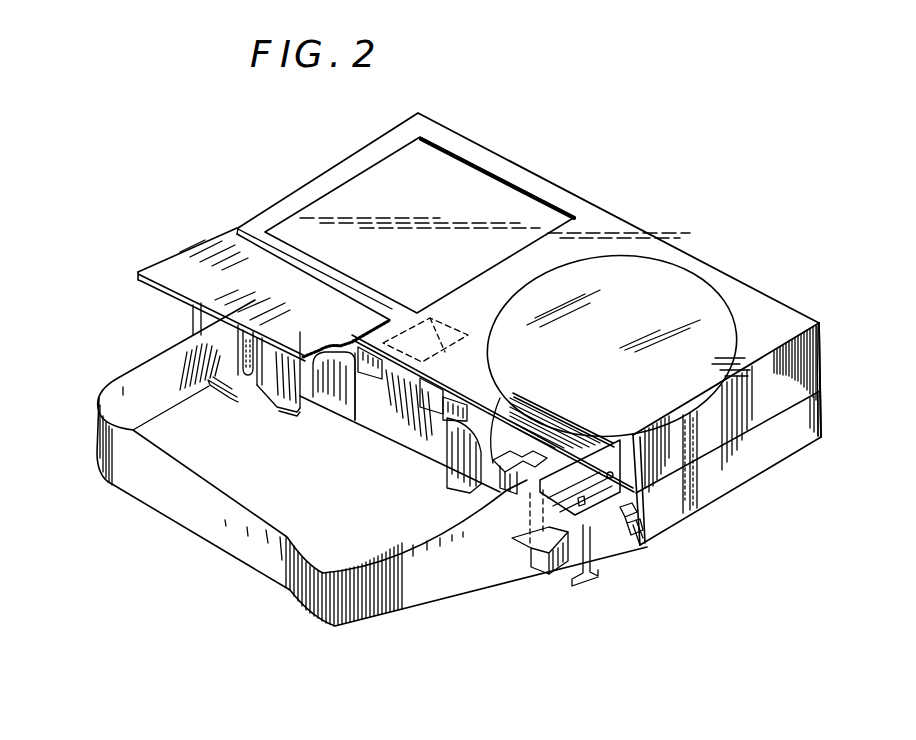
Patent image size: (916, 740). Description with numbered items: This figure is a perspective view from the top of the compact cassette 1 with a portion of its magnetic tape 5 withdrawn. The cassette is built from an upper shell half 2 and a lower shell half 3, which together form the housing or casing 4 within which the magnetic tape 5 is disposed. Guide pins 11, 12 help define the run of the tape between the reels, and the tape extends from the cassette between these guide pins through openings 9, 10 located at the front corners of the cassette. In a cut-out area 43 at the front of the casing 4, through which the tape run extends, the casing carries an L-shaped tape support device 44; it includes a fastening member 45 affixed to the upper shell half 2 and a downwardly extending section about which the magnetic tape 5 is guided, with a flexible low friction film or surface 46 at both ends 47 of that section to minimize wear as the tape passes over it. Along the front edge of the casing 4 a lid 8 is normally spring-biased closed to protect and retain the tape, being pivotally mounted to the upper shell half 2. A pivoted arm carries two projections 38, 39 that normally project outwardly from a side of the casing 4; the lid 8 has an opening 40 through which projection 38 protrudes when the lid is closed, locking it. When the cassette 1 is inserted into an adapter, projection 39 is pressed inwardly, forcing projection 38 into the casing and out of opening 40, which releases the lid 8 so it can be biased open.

The compact cassette 1 is at (746, 259).
The upper shell half 2 is at (513, 164).
The lower shell half 3 is at (771, 455).
The housing or casing 4 is at (822, 362).
The magnetic tape 5 is at (280, 582).
The lid 8 is at (181, 256).
The opening 9 is at (533, 545).
The opening 10 is at (217, 390).
The guide pin 11 is at (530, 490).
The guide pin 12 is at (247, 378).
The projection 38 is at (621, 523).
The projection 39 is at (648, 535).
The opening 40 is at (585, 506).
The cut-out area 43 is at (457, 399).
The L-shaped tape support device 44 is at (373, 442).
The fastening member 45 is at (427, 320).
The flexible low friction film or surface 46 is at (336, 398).
The ends 47 is at (327, 368).